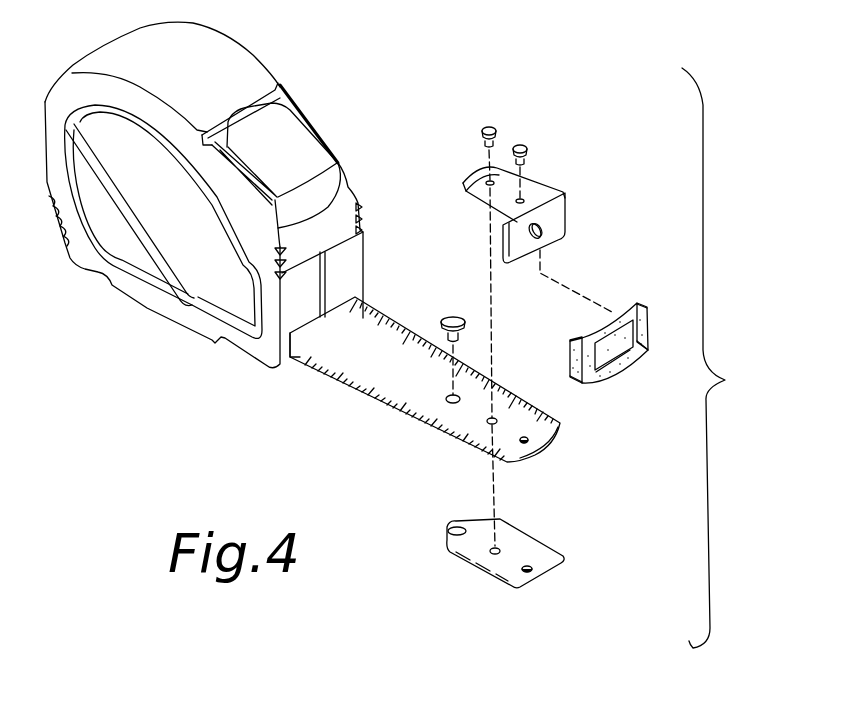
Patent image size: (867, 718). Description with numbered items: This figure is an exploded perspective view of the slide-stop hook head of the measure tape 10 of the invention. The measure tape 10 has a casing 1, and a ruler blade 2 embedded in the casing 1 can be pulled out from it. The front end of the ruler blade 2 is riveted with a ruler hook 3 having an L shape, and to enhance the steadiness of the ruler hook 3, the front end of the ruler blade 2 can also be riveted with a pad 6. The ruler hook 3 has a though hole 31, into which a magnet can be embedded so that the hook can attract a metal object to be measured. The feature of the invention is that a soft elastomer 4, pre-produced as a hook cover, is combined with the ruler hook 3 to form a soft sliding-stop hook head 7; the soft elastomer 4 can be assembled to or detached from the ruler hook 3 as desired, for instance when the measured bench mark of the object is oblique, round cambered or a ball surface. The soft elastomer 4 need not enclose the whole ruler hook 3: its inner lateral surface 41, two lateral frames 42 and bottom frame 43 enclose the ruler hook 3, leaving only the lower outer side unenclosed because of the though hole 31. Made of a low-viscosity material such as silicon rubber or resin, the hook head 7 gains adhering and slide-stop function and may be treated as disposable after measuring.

The casing 1 is at (253, 70).
The ruler blade 2 is at (374, 334).
The ruler hook 3 is at (533, 211).
The though hole 31 is at (548, 231).
The soft elastomer 4 is at (605, 336).
The inner lateral surface 41 is at (618, 320).
The lateral frames 42 is at (642, 304).
The bottom frame 43 is at (628, 367).
The pad 6 is at (522, 545).
The sliding-stop hook head 7 is at (716, 358).
The measure tape 10 is at (466, 63).